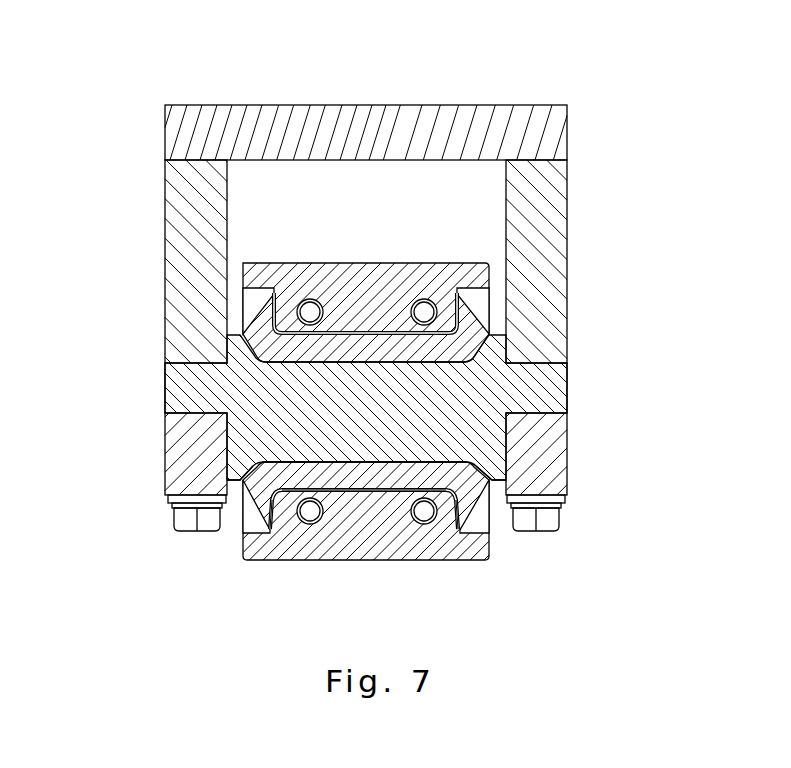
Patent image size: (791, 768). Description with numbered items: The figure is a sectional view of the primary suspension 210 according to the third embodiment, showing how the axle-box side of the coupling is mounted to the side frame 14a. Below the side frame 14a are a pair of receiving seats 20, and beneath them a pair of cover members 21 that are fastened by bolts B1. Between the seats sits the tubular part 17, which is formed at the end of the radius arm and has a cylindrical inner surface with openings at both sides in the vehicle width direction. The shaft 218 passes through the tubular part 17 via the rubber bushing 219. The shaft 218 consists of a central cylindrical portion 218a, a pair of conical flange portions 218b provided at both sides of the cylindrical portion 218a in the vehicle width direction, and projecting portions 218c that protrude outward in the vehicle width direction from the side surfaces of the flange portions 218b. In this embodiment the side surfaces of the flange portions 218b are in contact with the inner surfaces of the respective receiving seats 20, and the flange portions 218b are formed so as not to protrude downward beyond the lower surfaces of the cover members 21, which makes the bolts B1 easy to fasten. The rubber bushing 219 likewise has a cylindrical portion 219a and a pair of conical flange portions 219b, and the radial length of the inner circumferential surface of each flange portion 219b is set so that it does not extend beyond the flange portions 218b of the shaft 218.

The primary suspension 210 is at (145, 110).
The side frame 14a is at (560, 133).
The receiving seat 20 is at (165, 213).
The cover member 21 is at (165, 465).
The tubular part 17 is at (302, 267).
The shaft 218 is at (388, 377).
The cylindrical portion 218a is at (345, 440).
The conical flange portion 218b is at (232, 480).
The projecting portion 218c is at (165, 394).
The rubber bushing 219 is at (360, 337).
The cylindrical portion 219a is at (390, 478).
The conical flange portion 219b is at (272, 527).
The bolt B1 is at (182, 533).